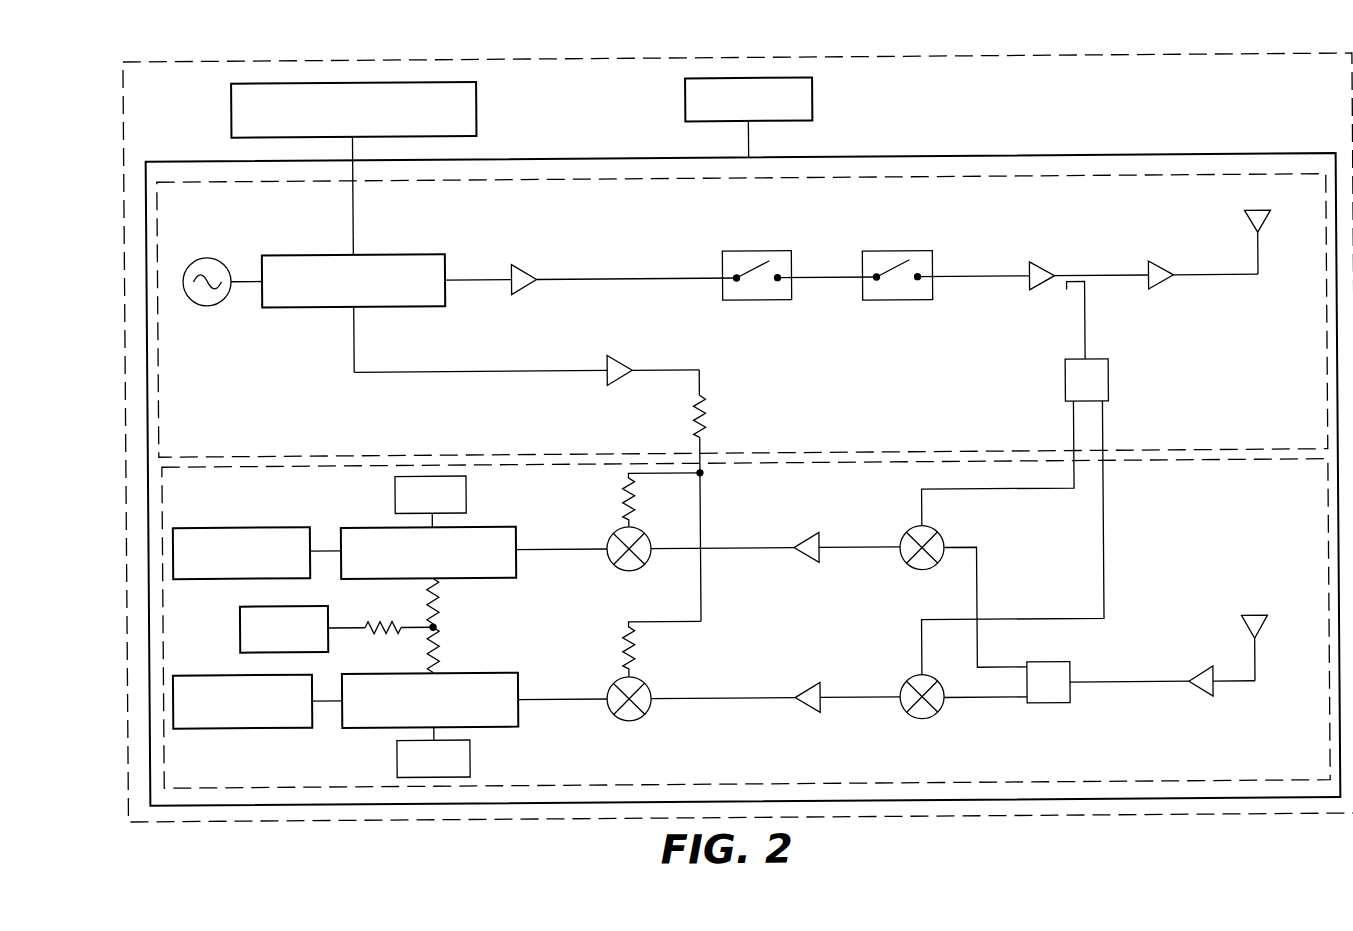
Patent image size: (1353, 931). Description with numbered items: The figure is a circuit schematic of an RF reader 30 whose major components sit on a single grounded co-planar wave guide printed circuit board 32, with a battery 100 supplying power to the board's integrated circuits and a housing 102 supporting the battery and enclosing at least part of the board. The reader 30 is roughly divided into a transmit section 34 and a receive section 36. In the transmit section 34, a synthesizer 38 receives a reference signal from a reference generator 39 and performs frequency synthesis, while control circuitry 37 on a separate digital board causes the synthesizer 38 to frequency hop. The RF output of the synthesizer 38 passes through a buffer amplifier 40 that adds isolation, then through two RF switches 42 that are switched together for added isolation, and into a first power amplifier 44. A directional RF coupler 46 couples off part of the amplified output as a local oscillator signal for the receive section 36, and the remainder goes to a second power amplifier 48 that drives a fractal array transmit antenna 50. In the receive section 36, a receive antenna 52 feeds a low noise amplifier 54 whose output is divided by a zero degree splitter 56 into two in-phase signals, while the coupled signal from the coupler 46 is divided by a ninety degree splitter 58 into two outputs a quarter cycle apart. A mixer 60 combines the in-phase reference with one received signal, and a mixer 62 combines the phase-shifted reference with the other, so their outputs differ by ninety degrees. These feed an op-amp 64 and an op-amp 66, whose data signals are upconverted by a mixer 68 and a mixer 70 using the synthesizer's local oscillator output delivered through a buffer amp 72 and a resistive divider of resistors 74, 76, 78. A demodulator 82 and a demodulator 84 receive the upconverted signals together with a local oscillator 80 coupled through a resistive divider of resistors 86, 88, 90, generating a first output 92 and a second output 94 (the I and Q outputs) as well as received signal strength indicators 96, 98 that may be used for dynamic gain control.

The RF reader 30 is at (181, 40).
The printed circuit board 32 is at (585, 157).
The transmit section 34 is at (988, 176).
The receive section 36 is at (265, 782).
The control circuitry 37 is at (479, 108).
The synthesizer 38 is at (321, 304).
The reference generator 39 is at (208, 302).
The buffer amplifier 40 is at (528, 293).
The RF switch 42 is at (750, 300).
The first power amplifier 44 is at (1030, 277).
The directional RF coupler 46 is at (1080, 288).
The second power amplifier 48 is at (1165, 292).
The transmit antenna 50 is at (1270, 230).
The receive antenna 52 is at (1261, 636).
The low noise amplifier 54 is at (1197, 670).
The 0 degrees splitter 56 is at (1046, 705).
The 90 degrees splitter 58 is at (1066, 380).
The mixer 60 is at (908, 521).
The mixer 62 is at (908, 672).
The op-amp 64 is at (809, 534).
The op-amp 66 is at (810, 684).
The mixer 68 is at (612, 567).
The mixer 70 is at (611, 678).
The buffer amp 72 is at (626, 384).
The resistor 74 is at (708, 412).
The resistor 76 is at (636, 500).
The resistor 78 is at (640, 658).
The local oscillator 80 is at (239, 621).
The demodulator 82 is at (371, 525).
The demodulator 84 is at (464, 671).
The resistor 86 is at (396, 623).
The resistor 88 is at (440, 603).
The resistor 90 is at (427, 650).
The first output 92 is at (244, 523).
The second output 94 is at (230, 671).
The Received Signal Strength Indicator 96 is at (466, 492).
The Received Signal Strength Indicator 98 is at (468, 756).
The battery 100 is at (815, 96).
The housing 102 is at (997, 44).